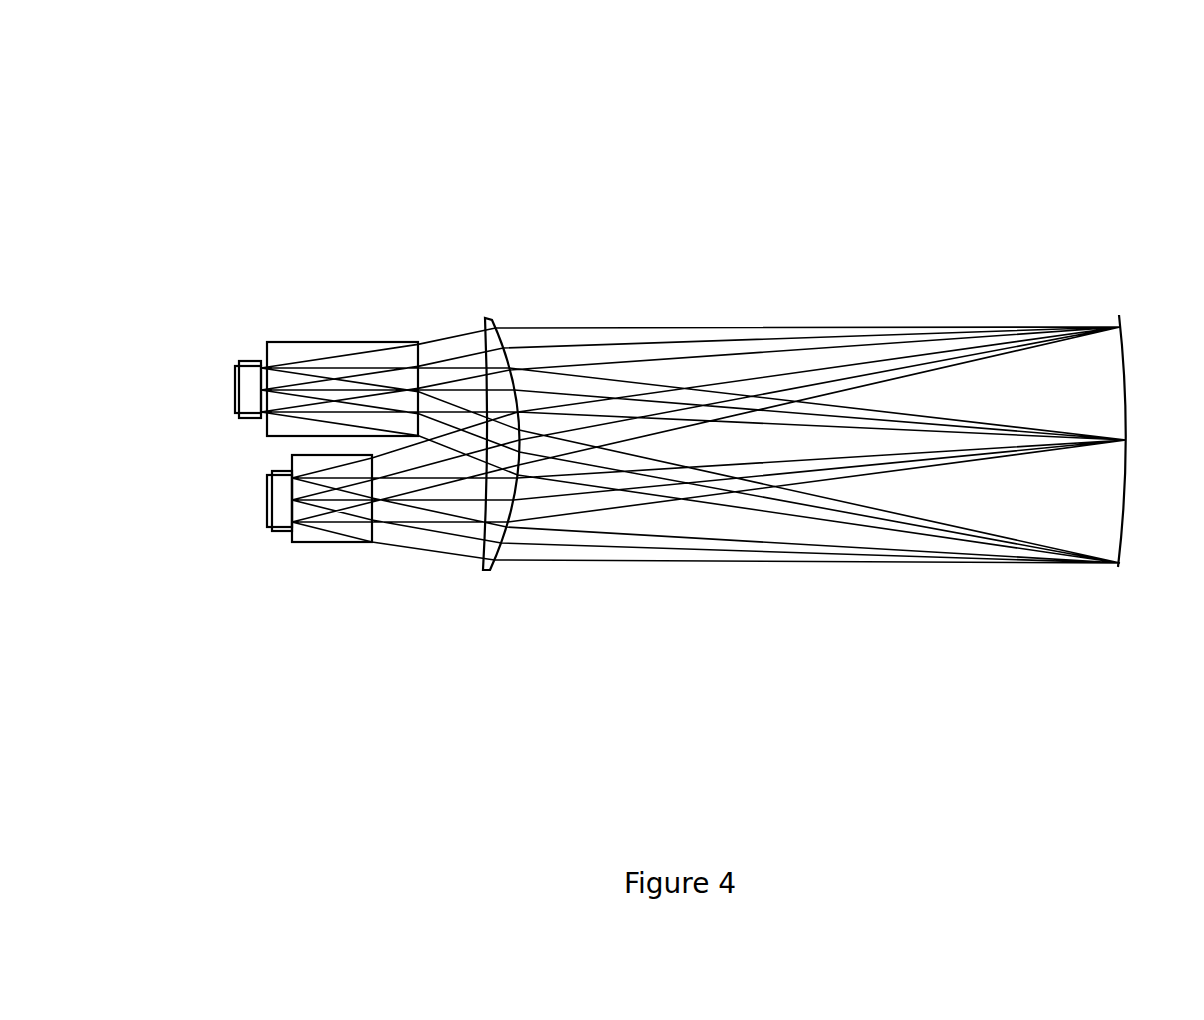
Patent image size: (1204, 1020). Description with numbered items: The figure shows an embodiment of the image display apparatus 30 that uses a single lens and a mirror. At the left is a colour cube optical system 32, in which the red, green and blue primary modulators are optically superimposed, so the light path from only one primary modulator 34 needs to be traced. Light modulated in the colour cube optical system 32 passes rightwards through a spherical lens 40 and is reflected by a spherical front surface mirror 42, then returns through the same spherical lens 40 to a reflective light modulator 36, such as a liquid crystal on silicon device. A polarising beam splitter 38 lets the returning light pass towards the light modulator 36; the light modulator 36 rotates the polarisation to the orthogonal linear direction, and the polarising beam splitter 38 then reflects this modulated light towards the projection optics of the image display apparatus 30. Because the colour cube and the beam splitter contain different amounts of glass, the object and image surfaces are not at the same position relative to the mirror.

The image display apparatus 30 is at (356, 169).
The colour cube optical system 32 is at (333, 342).
The primary modulator 34 is at (235, 386).
The light modulator 36 is at (267, 498).
The polarising beam splitter 38 is at (338, 542).
The spherical lens 40 is at (486, 318).
The spherical front surface mirror 42 is at (1126, 425).